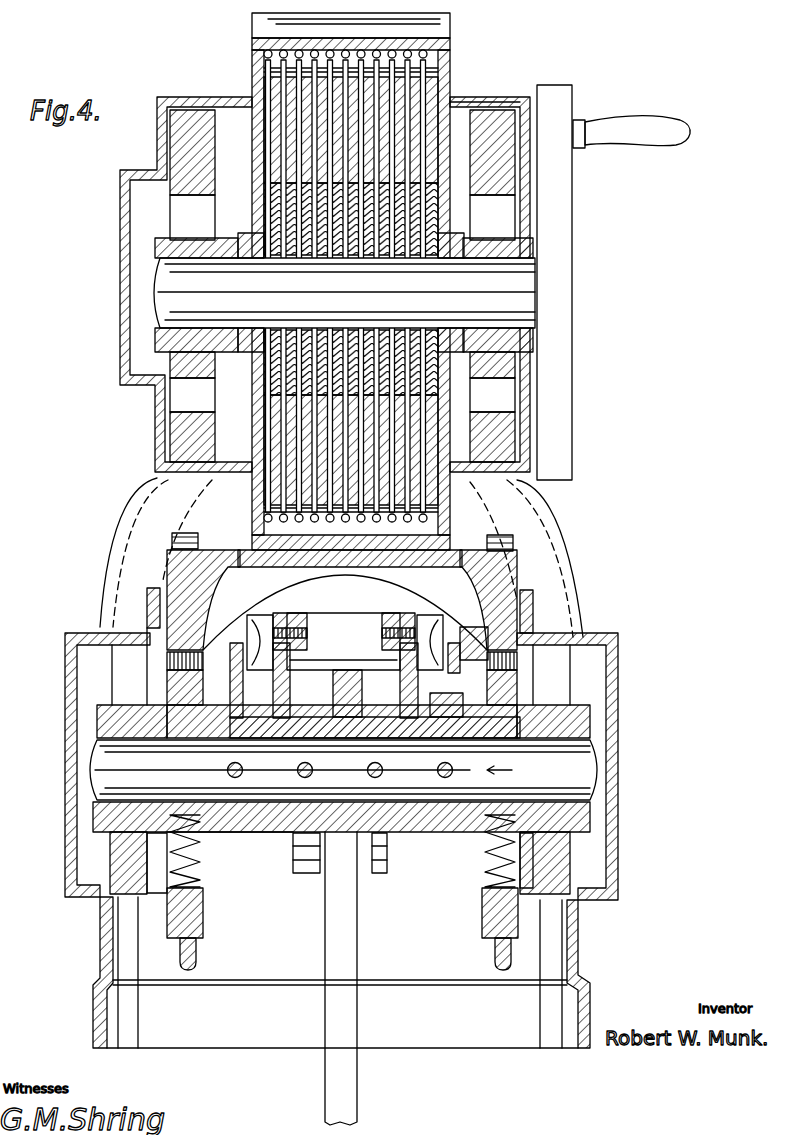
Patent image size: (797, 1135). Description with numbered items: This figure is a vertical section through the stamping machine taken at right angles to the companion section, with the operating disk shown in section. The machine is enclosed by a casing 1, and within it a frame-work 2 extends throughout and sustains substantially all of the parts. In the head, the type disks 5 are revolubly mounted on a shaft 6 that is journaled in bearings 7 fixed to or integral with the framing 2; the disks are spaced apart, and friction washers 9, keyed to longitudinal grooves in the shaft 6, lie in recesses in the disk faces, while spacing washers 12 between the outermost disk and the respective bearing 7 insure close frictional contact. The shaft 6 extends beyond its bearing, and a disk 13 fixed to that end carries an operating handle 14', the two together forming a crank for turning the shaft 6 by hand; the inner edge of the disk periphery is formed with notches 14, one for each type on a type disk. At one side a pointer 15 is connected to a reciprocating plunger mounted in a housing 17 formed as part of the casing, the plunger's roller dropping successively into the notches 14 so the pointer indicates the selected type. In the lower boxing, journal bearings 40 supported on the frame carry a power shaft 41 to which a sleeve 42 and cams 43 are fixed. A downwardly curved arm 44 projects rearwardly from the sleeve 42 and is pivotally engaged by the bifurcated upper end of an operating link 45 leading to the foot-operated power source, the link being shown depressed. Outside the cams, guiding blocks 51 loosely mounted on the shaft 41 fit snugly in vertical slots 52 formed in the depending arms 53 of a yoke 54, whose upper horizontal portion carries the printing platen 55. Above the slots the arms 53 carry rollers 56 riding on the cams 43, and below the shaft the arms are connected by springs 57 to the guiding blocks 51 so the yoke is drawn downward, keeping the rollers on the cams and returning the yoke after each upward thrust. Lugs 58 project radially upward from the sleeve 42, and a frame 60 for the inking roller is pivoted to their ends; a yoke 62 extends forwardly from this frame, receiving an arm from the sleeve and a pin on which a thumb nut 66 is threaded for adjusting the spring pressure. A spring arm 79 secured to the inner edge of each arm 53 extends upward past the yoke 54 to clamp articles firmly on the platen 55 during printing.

The casing 1 is at (490, 107).
The frame-work 2 is at (183, 128).
The type disks 5 is at (455, 102).
The shaft 6 is at (455, 290).
The bearings 7 is at (155, 337).
The friction washers 9 is at (436, 192).
The spacing washers 12 is at (258, 352).
The disk 13 is at (560, 235).
The notches 14 is at (580, 289).
The operating handle 14' is at (644, 137).
The pointer 15 is at (262, 92).
The housing 17 is at (482, 622).
The journal bearings 40 is at (100, 720).
The power shaft 41 is at (95, 782).
The sleeve 42 is at (278, 833).
The cams 43 is at (240, 833).
The arm 44 is at (333, 697).
The operating link 45 is at (357, 1068).
The guiding blocks 51 is at (262, 860).
The slots 52 is at (112, 692).
The arms 53 is at (160, 627).
The yoke 54 is at (515, 582).
The printing platen 55 is at (430, 548).
The rollers 56 is at (258, 622).
The springs 57 is at (483, 862).
The arms or lugs 58 is at (274, 702).
The frame 60 is at (450, 672).
The yoke 62 is at (365, 620).
The thumb nut 66 is at (300, 625).
The spring arm 79 is at (190, 533).